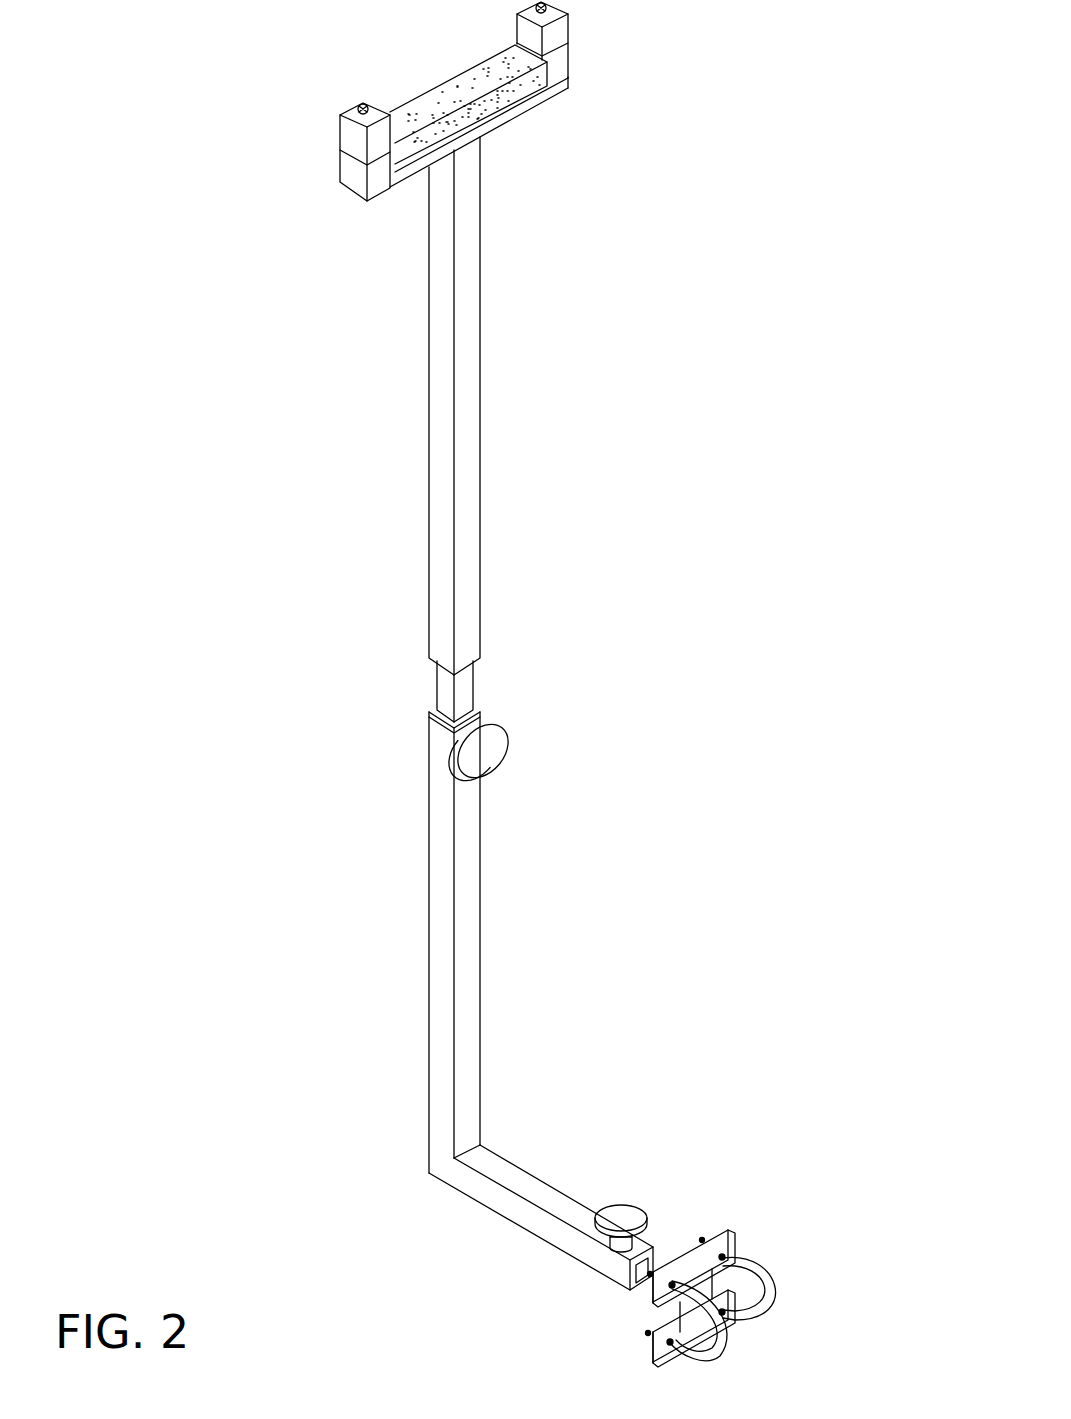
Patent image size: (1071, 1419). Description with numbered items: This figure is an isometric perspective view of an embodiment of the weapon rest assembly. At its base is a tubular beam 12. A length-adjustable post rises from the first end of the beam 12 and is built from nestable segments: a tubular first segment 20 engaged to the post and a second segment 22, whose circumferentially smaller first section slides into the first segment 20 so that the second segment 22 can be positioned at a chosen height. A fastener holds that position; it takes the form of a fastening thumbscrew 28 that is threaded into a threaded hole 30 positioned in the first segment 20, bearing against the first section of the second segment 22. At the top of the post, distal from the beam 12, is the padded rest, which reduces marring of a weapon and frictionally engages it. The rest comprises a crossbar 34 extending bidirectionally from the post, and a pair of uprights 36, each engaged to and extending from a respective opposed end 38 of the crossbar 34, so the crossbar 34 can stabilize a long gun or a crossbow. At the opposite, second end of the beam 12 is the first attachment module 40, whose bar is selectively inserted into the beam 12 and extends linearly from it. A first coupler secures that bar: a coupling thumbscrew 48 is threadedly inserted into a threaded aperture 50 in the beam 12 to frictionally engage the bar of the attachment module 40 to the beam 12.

The beam 12 is at (498, 1216).
The first segment 20 is at (428, 846).
The second segment 22 is at (430, 600).
The fastening thumbscrew 28 is at (493, 752).
The threaded hole 30 is at (453, 750).
The crossbar 34 is at (513, 117).
The uprights 36 is at (517, 13).
The opposed end 38 is at (398, 158).
The first attachment module 40 is at (723, 1270).
The coupling thumbscrew 48 is at (625, 1213).
The threaded aperture 50 is at (620, 1245).